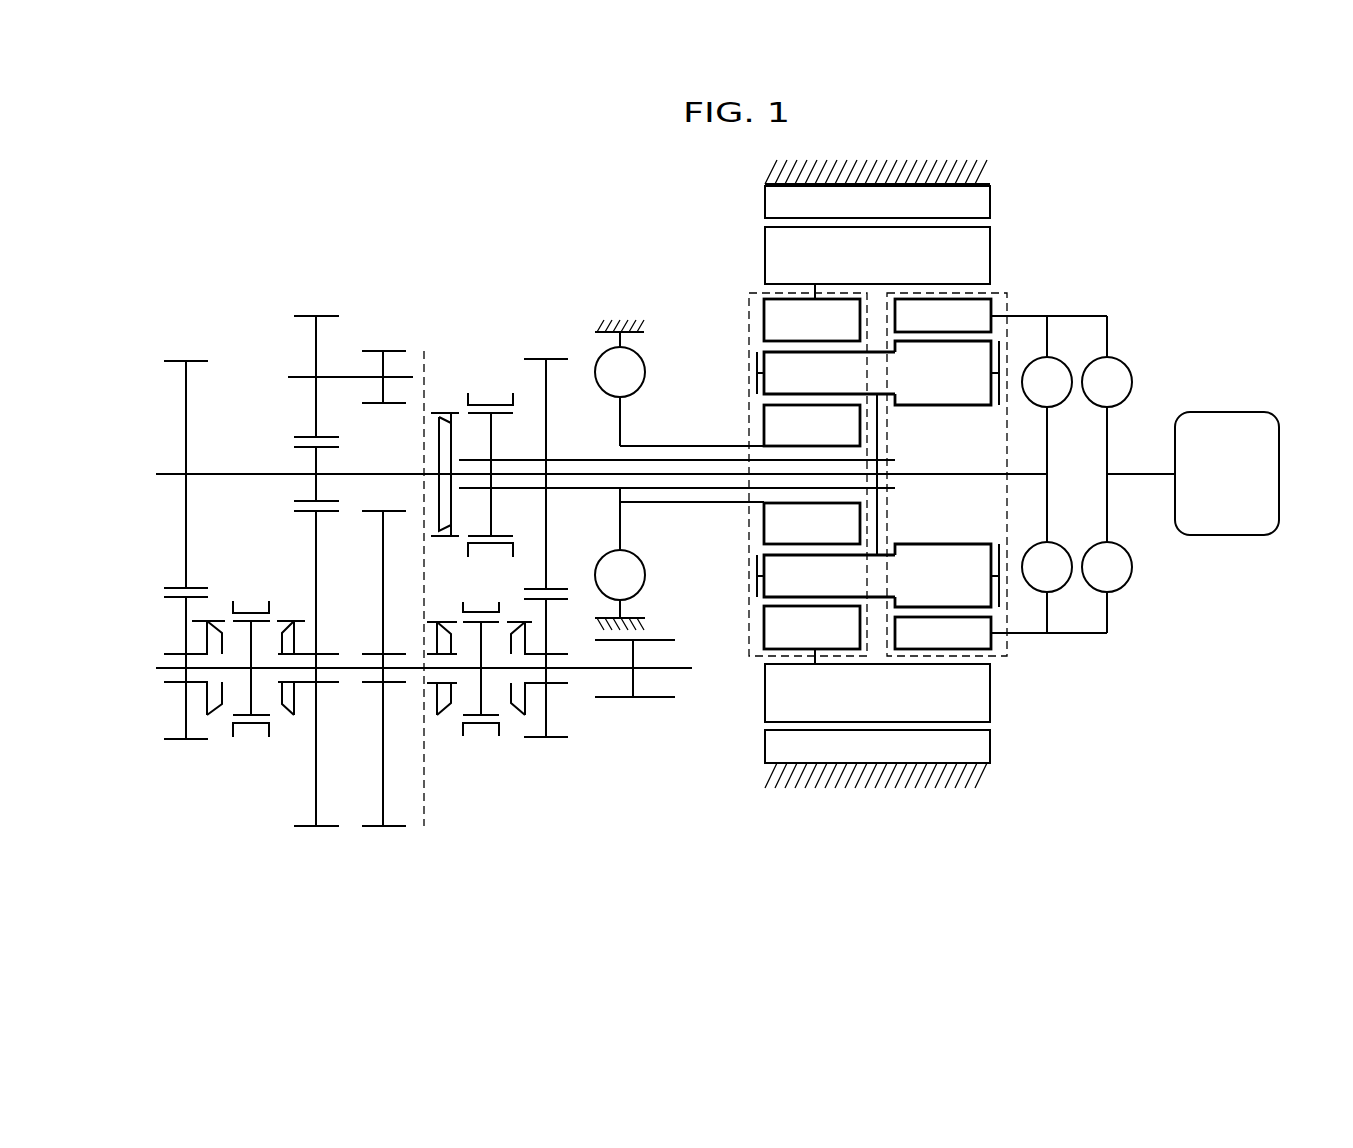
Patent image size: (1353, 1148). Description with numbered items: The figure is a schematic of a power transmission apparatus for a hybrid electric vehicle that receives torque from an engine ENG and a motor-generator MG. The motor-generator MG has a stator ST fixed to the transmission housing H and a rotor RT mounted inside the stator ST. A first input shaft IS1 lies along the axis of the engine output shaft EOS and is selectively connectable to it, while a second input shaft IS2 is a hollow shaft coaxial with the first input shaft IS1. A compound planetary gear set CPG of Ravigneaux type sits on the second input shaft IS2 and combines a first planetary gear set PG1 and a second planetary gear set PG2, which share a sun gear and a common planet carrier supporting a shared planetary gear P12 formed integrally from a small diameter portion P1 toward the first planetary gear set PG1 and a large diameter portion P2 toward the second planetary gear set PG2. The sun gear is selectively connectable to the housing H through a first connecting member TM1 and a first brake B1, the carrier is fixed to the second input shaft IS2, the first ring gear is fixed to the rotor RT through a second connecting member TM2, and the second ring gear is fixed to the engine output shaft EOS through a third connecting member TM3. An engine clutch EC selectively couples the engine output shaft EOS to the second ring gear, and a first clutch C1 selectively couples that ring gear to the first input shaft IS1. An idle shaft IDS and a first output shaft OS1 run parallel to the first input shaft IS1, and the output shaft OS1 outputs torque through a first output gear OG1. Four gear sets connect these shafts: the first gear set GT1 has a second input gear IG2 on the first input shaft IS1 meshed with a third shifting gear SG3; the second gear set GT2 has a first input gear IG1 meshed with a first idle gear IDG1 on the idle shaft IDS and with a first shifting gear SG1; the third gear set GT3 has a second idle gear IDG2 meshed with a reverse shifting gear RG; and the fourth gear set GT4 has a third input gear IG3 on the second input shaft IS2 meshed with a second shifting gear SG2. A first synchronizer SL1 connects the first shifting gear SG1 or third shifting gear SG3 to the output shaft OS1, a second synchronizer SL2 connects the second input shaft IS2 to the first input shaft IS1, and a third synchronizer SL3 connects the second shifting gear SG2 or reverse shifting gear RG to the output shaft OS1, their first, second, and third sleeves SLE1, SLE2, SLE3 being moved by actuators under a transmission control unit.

The transmission housing H is at (880, 172).
The motor-generator MG is at (912, 474).
The stator ST is at (877, 474).
The rotor RT is at (877, 474).
The first input shaft IS1 is at (968, 477).
The second input shaft IS2 is at (581, 490).
The first output shaft OS1 is at (683, 670).
The engine output shaft EOS is at (1142, 476).
The engine ENG is at (1227, 473).
The first input gear IG1 is at (316, 487).
The second input gear IG2 is at (186, 516).
The third input gear IG3 is at (547, 425).
The first idle gear IDG1 is at (316, 346).
The second idle gear IDG2 is at (384, 366).
The idle shaft IDS is at (341, 375).
The first shifting gear SG1 is at (318, 762).
The second shifting gear SG2 is at (548, 708).
The third shifting gear SG3 is at (186, 707).
The reverse shifting gear RG is at (389, 790).
The first gear set GT1 is at (186, 757).
The second gear set GT2 is at (316, 842).
The third gear set GT3 is at (383, 842).
The fourth gear set GT4 is at (549, 760).
The first synchronizer SL1 is at (262, 756).
The second synchronizer SL2 is at (504, 372).
The third synchronizer SL3 is at (493, 758).
The first sleeve SLE1 is at (240, 727).
The second sleeve SLE2 is at (483, 402).
The third sleeve SLE3 is at (473, 728).
The first output gear OG1 is at (647, 699).
The first brake B1 is at (620, 475).
The first clutch C1 is at (1047, 474).
The engine clutch EC is at (1107, 474).
The first connecting member TM1 is at (700, 445).
The second connecting member TM2 is at (815, 292).
The third connecting member TM3 is at (1061, 445).
The compound planetary gear set CPG is at (860, 588).
The first planetary gear set PG1 is at (805, 567).
The second planetary gear set PG2 is at (918, 567).
The small diameter portion P1 is at (826, 474).
The large diameter portion P2 is at (947, 474).
The shared planetary gear P12 is at (877, 372).